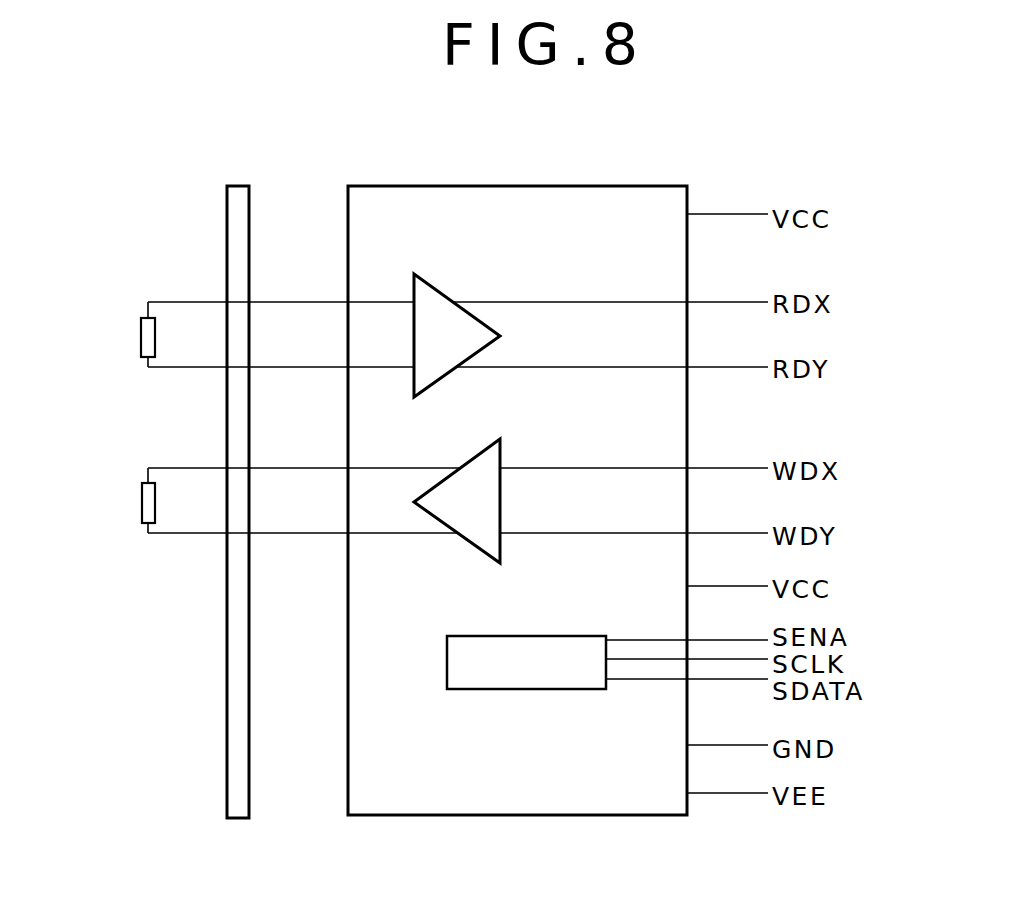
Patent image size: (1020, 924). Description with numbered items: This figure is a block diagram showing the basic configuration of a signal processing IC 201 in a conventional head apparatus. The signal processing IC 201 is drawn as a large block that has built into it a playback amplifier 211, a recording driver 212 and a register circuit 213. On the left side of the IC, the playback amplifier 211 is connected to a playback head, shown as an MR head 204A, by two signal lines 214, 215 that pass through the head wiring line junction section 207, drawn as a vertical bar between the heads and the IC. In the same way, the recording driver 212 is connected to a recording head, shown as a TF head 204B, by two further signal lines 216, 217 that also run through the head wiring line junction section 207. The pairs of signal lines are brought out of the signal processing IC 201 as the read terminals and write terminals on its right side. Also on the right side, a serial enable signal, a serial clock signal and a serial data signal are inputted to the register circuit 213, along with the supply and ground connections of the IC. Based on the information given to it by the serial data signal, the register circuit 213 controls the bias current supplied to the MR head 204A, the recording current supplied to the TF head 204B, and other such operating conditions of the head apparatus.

The signal processing IC 201 is at (398, 186).
The head wiring line junction section 207 is at (238, 186).
The MR head 204A is at (141, 338).
The TF head 204B is at (141, 503).
The playback amplifier 211 is at (449, 298).
The recording driver 212 is at (463, 463).
The register circuit 213 is at (517, 689).
The signal line 214 is at (308, 302).
The signal line 215 is at (288, 367).
The signal line 216 is at (307, 470).
The signal line 217 is at (288, 535).